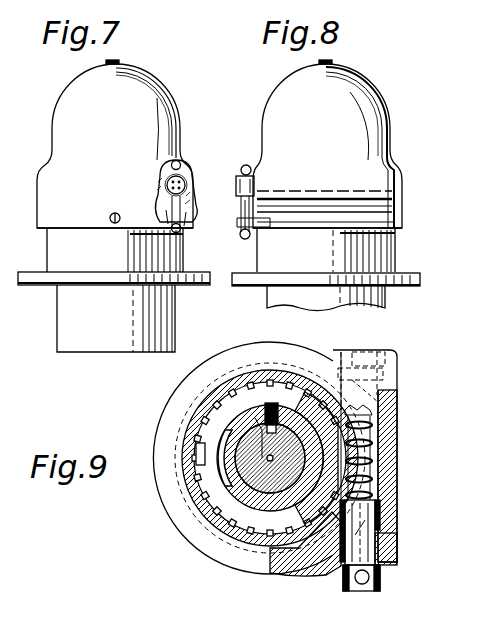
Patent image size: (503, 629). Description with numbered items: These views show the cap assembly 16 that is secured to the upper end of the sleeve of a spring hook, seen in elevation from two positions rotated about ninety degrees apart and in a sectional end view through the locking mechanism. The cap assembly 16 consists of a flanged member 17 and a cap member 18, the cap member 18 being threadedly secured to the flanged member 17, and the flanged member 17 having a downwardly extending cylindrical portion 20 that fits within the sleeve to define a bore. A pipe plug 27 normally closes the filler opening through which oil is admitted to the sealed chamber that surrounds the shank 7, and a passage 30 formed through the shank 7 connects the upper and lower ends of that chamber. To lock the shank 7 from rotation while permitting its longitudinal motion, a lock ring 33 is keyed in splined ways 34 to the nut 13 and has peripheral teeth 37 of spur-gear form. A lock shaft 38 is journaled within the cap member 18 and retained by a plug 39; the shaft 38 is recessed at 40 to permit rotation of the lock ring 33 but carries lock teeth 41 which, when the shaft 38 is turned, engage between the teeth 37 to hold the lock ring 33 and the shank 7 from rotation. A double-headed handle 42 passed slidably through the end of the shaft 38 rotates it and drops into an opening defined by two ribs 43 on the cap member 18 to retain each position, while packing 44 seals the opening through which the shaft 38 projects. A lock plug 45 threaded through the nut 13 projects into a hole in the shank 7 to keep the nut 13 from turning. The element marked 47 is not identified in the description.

In FIG. 9, the shank 7 is at (262, 421).
In FIG. 9, the nut 13 is at (270, 461).
In FIG. 7, the cap assembly 16 is at (151, 74).
In FIG. 8, the cap assembly 16 is at (377, 87).
In FIG. 7, the flanged member 17 is at (184, 247).
In FIG. 8, the flanged member 17 is at (393, 256).
In FIG. 7, the cap member 18 is at (176, 108).
In FIG. 8, the cap member 18 is at (382, 135).
In FIG. 9, the cap member 18 is at (398, 483).
In FIG. 7, the cylindrical portion 20 is at (176, 322).
In FIG. 8, the cylindrical portion 20 is at (388, 300).
In FIG. 7, the pipe plug 27 is at (113, 62).
In FIG. 8, the pipe plug 27 is at (332, 62).
In FIG. 9, the passage 30 is at (238, 482).
In FIG. 9, the lock ring 33 is at (213, 486).
In FIG. 9, the splined ways 34 is at (197, 425).
In FIG. 9, the teeth 37 is at (224, 497).
In FIG. 7, the lock shaft 38 is at (190, 184).
In FIG. 8, the lock shaft 38 is at (253, 204).
In FIG. 9, the lock shaft 38 is at (378, 535).
In FIG. 9, the plug 39 is at (375, 357).
In FIG. 7, the recess 40 is at (60, 197).
In FIG. 9, the recess 40 is at (335, 540).
In FIG. 9, the lock teeth 41 is at (358, 448).
In FIG. 9, the handle 42 is at (364, 585).
In FIG. 7, the ribs 43 is at (193, 216).
In FIG. 8, the ribs 43 is at (245, 234).
In FIG. 9, the ribs 43 is at (382, 576).
In FIG. 9, the packing 44 is at (397, 548).
In FIG. 9, the lock plug 45 is at (273, 403).
In FIG. 7, the pivot ball 47 is at (185, 166).
In FIG. 8, the pivot ball 47 is at (246, 170).